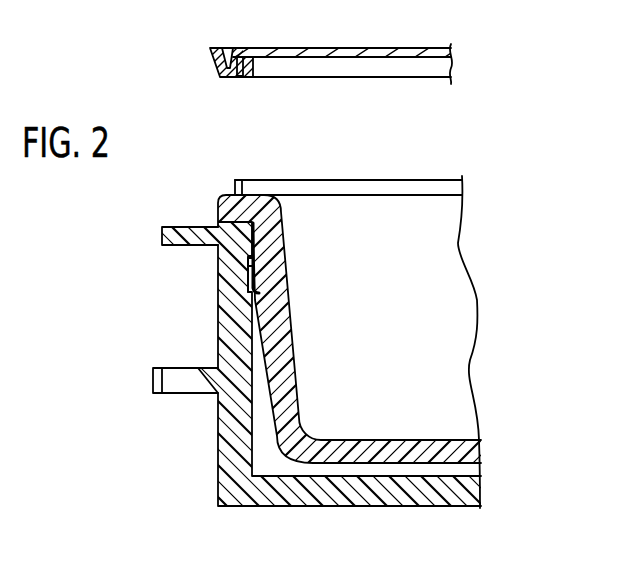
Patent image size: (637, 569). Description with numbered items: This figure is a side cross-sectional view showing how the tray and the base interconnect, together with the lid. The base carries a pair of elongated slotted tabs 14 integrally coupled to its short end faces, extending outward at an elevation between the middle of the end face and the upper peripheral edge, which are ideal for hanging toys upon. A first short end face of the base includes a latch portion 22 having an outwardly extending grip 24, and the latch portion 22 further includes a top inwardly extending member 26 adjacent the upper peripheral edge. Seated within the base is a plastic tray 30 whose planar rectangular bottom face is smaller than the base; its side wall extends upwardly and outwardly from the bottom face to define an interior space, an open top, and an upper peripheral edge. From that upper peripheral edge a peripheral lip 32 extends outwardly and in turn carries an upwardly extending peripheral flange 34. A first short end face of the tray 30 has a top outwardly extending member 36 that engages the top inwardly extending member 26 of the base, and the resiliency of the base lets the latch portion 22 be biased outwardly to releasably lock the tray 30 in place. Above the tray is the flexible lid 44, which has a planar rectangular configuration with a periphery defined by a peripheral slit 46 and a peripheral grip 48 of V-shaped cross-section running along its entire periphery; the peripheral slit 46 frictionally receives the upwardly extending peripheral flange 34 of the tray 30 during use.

The elongated slotted tab 14 is at (162, 367).
The latch portion 22 is at (318, 312).
The outwardly extending grip 24 is at (170, 227).
The top inwardly extending member 26 is at (281, 251).
The plastic tray 30 is at (283, 277).
The peripheral lip 32 is at (232, 194).
The upwardly extending peripheral flange 34 is at (237, 192).
The top outwardly extending member 36 is at (220, 277).
The flexible lid 44 is at (452, 56).
The peripheral slit 46 is at (240, 76).
The peripheral grip 48 is at (222, 68).